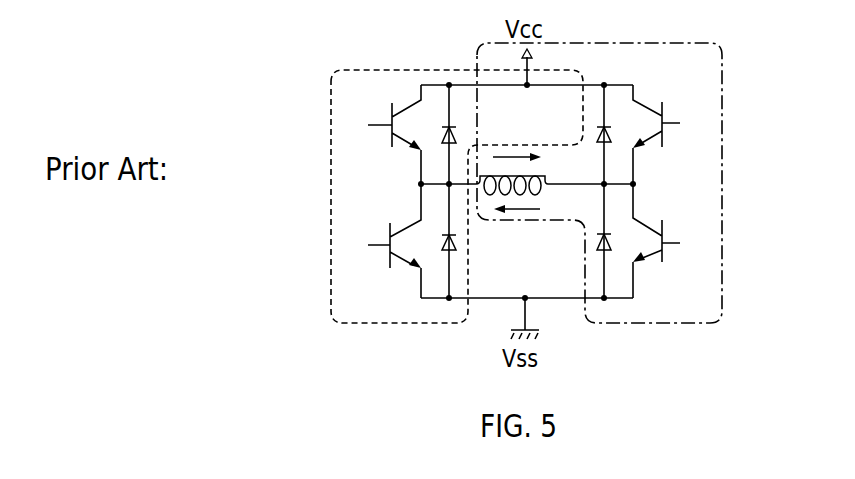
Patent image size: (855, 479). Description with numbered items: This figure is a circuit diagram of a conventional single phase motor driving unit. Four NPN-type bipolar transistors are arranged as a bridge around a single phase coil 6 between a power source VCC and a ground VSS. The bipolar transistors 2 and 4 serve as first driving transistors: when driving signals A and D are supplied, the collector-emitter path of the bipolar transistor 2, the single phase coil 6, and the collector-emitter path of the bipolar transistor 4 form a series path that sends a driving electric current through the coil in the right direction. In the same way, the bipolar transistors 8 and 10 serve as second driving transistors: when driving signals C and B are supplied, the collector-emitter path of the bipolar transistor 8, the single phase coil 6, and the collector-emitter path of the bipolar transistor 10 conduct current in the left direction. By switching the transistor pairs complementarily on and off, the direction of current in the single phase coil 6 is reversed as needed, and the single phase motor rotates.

The NPN-type bipolar transistor 2 is at (404, 103).
The NPN-type bipolar transistor 8 is at (643, 100).
The NPN-type bipolar transistor 10 is at (398, 268).
The NPN-type bipolar transistor 4 is at (645, 267).
The single phase coil 6 is at (548, 176).